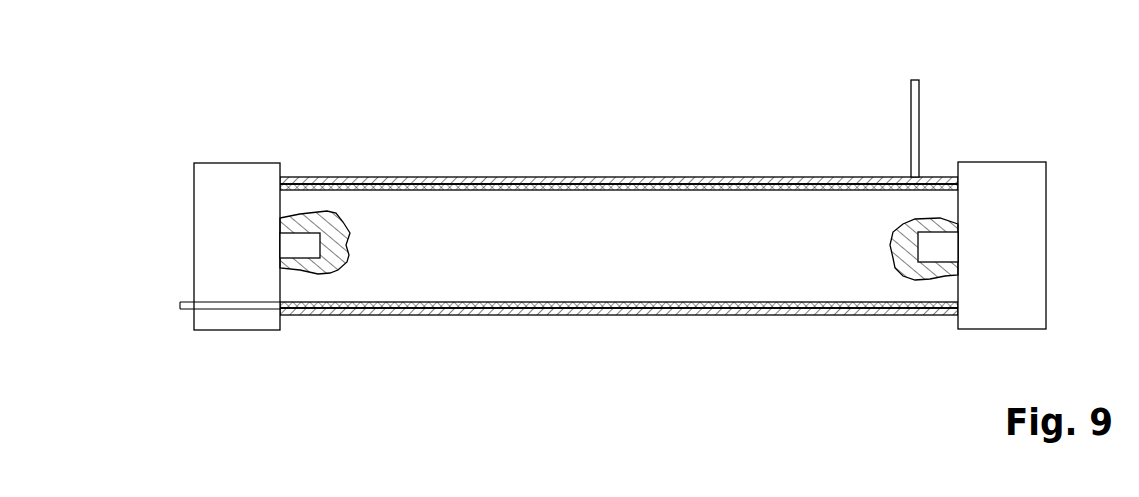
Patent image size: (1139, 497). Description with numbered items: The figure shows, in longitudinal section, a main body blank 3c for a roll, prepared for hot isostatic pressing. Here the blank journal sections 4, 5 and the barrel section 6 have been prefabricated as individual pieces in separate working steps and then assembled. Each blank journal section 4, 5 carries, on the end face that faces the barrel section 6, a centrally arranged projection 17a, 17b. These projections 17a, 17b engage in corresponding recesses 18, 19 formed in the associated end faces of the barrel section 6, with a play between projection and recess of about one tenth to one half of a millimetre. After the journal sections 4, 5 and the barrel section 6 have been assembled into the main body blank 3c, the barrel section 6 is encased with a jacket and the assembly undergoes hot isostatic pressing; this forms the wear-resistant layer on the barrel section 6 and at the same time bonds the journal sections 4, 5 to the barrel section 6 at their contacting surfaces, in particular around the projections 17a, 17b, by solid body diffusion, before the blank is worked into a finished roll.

The main body blank 3c is at (484, 162).
The blank journal section 4 is at (220, 219).
The blank journal section 5 is at (1002, 253).
The barrel section 6 is at (578, 233).
The projection 17a is at (298, 247).
The projection 17b is at (937, 245).
The recess 18 is at (316, 263).
The recess 19 is at (930, 262).